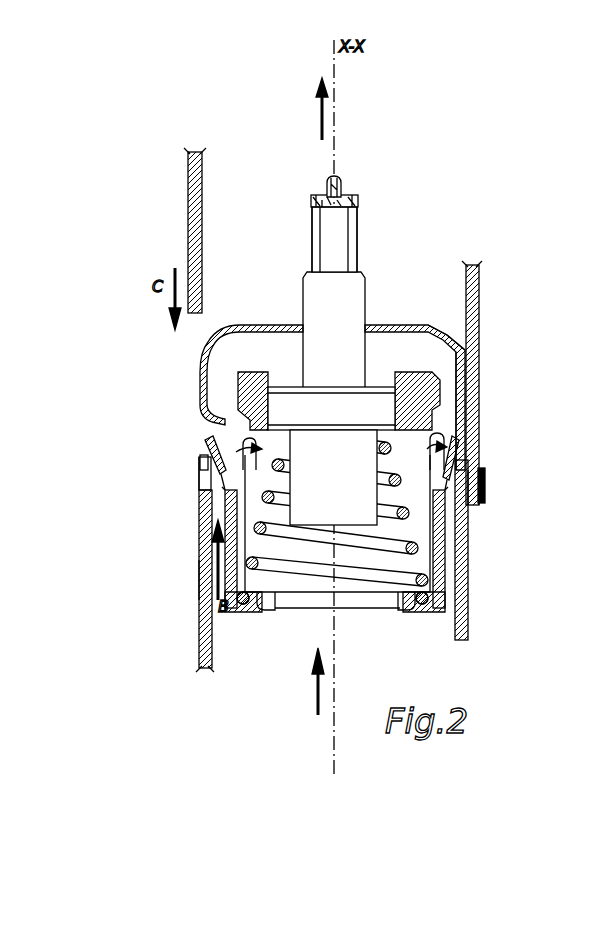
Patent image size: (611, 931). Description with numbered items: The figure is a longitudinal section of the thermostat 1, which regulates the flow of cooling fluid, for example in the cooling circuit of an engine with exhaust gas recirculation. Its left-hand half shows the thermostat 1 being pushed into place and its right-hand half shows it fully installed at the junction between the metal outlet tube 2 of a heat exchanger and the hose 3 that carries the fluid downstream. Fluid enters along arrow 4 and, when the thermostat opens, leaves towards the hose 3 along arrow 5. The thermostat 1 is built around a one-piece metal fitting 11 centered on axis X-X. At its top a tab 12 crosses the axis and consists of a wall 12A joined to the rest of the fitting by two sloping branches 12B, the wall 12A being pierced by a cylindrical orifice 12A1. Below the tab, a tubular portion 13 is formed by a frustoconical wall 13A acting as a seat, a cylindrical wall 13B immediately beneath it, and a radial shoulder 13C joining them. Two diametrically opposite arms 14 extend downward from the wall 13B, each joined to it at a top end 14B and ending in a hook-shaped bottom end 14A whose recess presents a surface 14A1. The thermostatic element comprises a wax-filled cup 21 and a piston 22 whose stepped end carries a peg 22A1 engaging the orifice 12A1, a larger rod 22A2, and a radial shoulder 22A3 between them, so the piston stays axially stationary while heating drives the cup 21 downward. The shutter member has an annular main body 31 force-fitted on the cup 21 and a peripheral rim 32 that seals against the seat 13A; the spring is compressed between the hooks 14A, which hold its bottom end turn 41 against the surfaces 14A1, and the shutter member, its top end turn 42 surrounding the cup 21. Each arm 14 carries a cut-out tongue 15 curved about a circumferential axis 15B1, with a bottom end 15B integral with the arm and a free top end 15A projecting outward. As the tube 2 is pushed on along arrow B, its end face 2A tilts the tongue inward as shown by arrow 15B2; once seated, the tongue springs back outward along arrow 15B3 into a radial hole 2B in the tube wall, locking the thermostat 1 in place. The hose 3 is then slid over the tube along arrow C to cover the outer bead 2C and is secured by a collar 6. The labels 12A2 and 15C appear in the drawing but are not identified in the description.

The thermostat 1 is at (290, 296).
The outlet tube 2 is at (180, 672).
The top end face of the tube 2A is at (200, 440).
The hole 2B is at (200, 482).
The outer peripheral bead 2C is at (200, 560).
The hose 3 is at (176, 171).
The arrow 4 is at (310, 682).
The arrow 5 is at (314, 109).
The peripheral collar 6 is at (489, 500).
The fitting 11 is at (190, 349).
The tab 12 is at (600, 160).
The wall 12A is at (355, 195).
The through cylindrical orifice 12A1 is at (340, 180).
The nozzle collar 12A2 is at (353, 212).
The branches 12B is at (355, 248).
The tubular portion 13 is at (563, 298).
The frustoconical wall 13A is at (430, 337).
The cylindrical wall 13B is at (468, 388).
The radial shoulder 13C is at (463, 345).
The arms 14 is at (227, 573).
The bottom end of the arm 14A is at (427, 615).
The surface 14A1 is at (445, 588).
The top end of the arm 14B is at (445, 438).
The tongue 15 is at (52, 425).
The free top end of the tongue 15A is at (210, 440).
The bottom end of the tongue 15B is at (200, 507).
The axis 15B1 is at (210, 500).
The arrow 15B2 is at (251, 459).
The arrow 15B3 is at (423, 458).
The lip seat 15C is at (200, 462).
The cup 21 is at (331, 456).
The piston 22 is at (343, 260).
The top end peg 22A1 is at (330, 183).
The rod 22A2 is at (318, 203).
The radial shoulder 22A3 is at (323, 193).
The annular main body 31 is at (487, 465).
The peripheral rim 32 is at (425, 385).
The bottom end turn 41 is at (240, 615).
The top end turn 42 is at (225, 398).